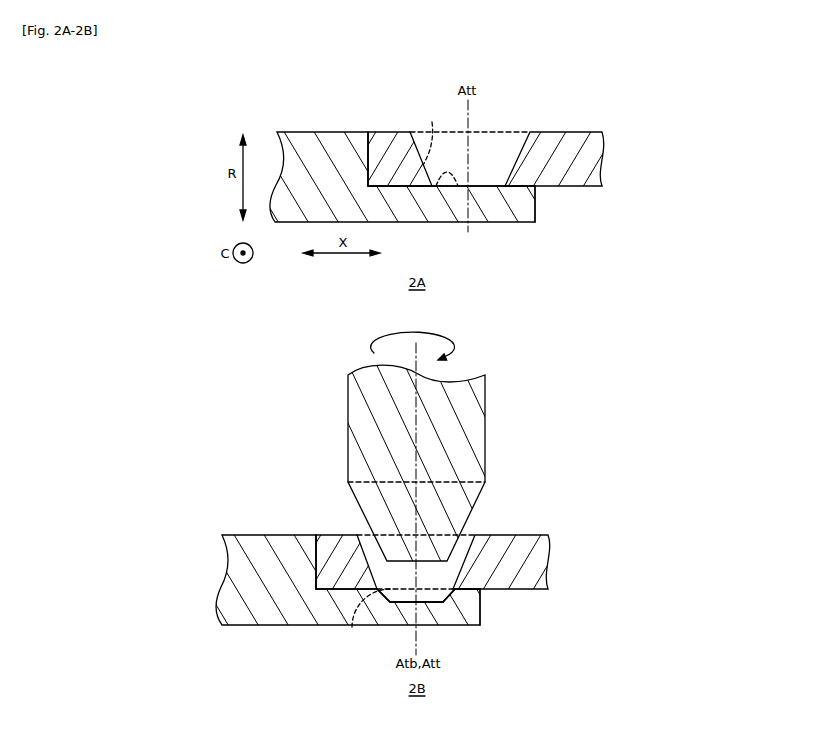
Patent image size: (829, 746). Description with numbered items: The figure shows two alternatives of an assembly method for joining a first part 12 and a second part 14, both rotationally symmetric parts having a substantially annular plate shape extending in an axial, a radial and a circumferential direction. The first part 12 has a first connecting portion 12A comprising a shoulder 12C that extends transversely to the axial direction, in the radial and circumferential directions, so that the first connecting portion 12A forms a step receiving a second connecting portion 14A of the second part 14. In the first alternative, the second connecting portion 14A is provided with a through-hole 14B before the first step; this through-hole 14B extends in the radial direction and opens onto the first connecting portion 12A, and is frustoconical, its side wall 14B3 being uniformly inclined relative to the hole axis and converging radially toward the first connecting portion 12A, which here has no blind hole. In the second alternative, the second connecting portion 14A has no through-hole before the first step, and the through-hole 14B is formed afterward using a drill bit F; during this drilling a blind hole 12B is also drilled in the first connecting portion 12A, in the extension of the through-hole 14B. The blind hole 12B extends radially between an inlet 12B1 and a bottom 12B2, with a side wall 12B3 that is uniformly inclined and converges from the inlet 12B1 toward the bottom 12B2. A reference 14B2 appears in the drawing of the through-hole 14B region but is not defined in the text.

In FIG. 2A, the first part 12 is at (307, 142).
In FIG. 2B, the first part 12 is at (248, 545).
In FIG. 2A, the first connecting portion 12A is at (503, 213).
In FIG. 2B, the first connecting portion 12A is at (481, 618).
In FIG. 2B, the blind hole 12B is at (398, 608).
In FIG. 2B, the inlet 12B1 is at (463, 607).
In FIG. 2B, the bottom 12B2 is at (447, 608).
In FIG. 2B, the side wall 12B3 is at (359, 614).
In FIG. 2A, the shoulder 12C is at (366, 150).
In FIG. 2B, the shoulder 12C is at (314, 548).
In FIG. 2A, the second part 14 is at (582, 137).
In FIG. 2B, the second part 14 is at (518, 543).
In FIG. 2A, the second connecting portion 14A is at (380, 135).
In FIG. 2B, the second connecting portion 14A is at (338, 543).
In FIG. 2A, the through-hole 14B is at (492, 152).
In FIG. 2B, the through-hole 14B is at (377, 550).
In FIG. 2A, the groove bottom projection 14B2 is at (445, 180).
In FIG. 2A, the side wall 14B3 is at (433, 135).
In FIG. 2B, the drill bit F is at (483, 412).